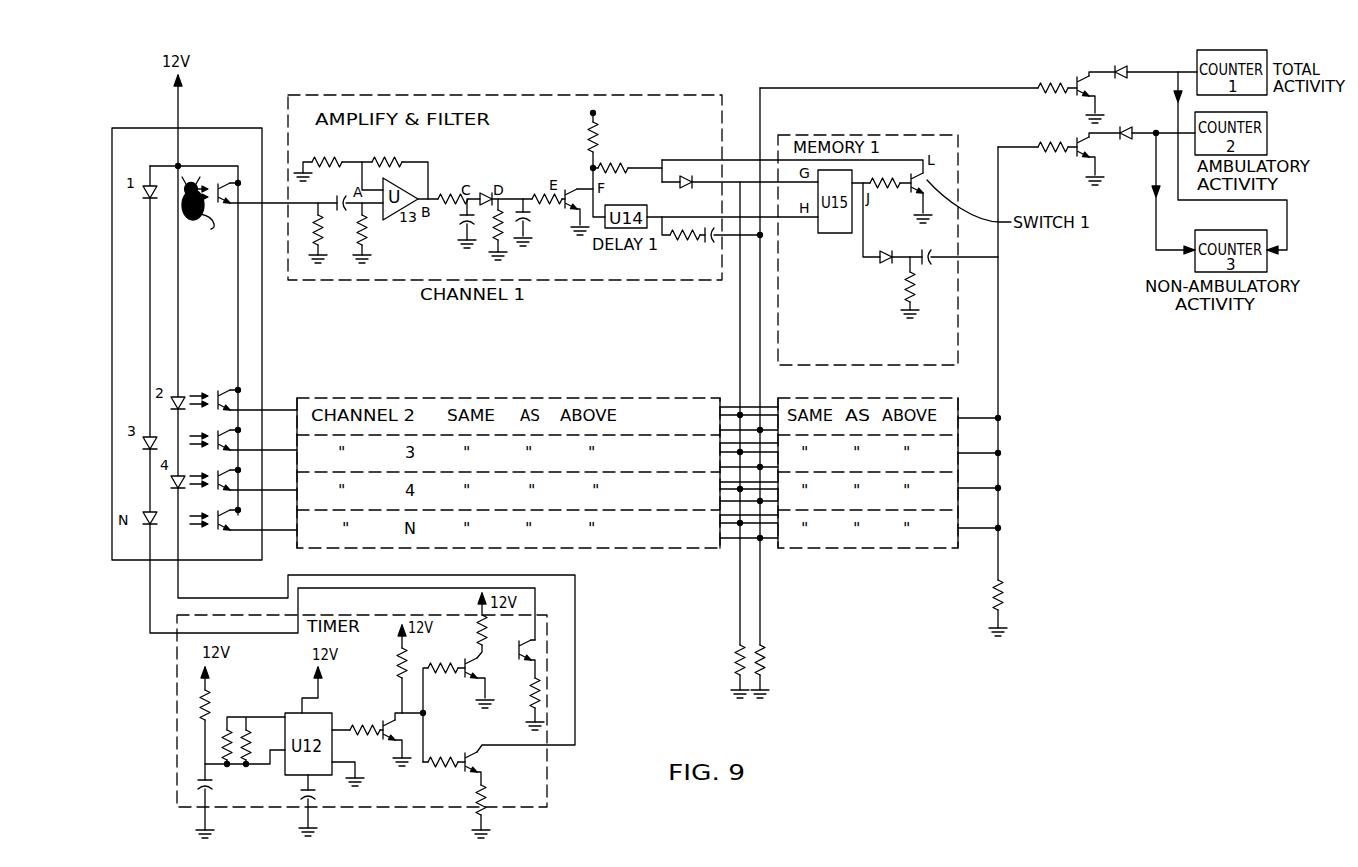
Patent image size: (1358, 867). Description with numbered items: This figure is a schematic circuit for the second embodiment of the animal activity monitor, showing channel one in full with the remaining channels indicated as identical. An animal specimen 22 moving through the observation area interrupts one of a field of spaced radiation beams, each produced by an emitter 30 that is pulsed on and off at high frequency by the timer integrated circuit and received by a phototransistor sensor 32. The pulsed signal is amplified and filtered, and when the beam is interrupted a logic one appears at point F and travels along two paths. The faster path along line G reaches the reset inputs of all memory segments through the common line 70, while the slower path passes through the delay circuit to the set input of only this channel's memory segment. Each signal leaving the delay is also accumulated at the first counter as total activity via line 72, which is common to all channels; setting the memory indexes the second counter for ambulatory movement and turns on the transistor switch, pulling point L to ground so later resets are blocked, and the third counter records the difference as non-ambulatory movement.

The animal specimen 22 is at (182, 208).
The emitter 30 is at (150, 186).
The phototransistor 32 is at (213, 192).
The common line 70 is at (740, 315).
The line 72 is at (760, 347).